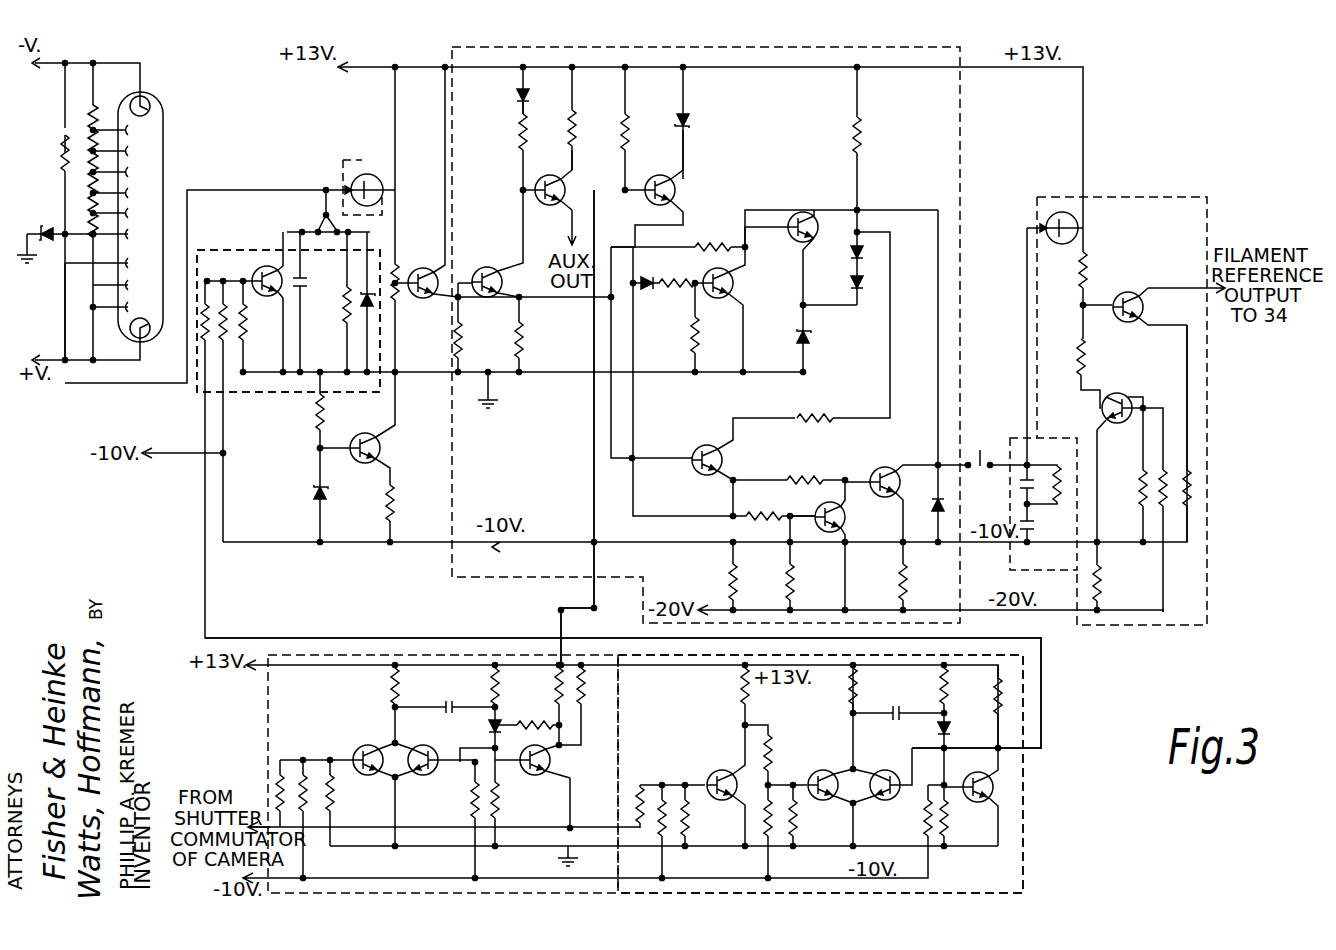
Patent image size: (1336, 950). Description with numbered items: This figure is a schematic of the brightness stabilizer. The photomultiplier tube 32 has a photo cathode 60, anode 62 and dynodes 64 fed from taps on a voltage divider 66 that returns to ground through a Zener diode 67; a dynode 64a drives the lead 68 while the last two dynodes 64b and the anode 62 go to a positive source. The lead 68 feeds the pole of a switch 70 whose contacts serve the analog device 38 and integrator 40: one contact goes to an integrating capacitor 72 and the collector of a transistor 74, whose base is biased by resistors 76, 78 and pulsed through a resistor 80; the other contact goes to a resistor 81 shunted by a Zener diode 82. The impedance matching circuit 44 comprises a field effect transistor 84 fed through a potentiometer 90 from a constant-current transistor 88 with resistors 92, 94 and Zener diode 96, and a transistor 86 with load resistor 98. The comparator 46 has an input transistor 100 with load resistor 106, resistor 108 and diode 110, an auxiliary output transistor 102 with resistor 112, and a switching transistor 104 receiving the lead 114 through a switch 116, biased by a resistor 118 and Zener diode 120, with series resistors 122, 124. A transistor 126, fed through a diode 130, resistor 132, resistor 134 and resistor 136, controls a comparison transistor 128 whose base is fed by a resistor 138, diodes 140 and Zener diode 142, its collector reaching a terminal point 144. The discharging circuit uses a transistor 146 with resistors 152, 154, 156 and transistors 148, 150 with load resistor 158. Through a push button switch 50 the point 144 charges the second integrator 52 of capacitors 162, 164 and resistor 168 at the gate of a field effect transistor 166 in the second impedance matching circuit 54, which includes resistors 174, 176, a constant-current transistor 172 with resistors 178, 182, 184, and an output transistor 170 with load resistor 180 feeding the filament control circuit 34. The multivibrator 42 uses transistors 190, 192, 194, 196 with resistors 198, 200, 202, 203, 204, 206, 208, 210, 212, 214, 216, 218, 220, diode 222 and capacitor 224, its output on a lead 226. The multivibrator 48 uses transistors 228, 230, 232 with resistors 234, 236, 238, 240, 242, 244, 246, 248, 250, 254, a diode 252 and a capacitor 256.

The photomultiplier tube 32 is at (160, 172).
The X-ray source filament energizing and control circuit 34 is at (232, 859).
The analog device 38 is at (218, 250).
The integrator 40 is at (288, 321).
The one-shot multivibrator 42 is at (1025, 826).
The impedance matching circuit 44 is at (383, 160).
The comparator 46 is at (710, 50).
The one-shot multivibrator 48 is at (268, 700).
The push button switch 50 is at (980, 450).
The second integrator 52 is at (1013, 438).
The second impedance matching circuit 54 is at (1210, 226).
The photo cathode 60 is at (153, 108).
The anode 62 is at (152, 341).
The dynodes 64 is at (132, 150).
The dynode 64a is at (111, 303).
The last two dynodes 64b is at (124, 297).
The voltage divider 66 is at (57, 120).
The Zener diode 67 is at (52, 240).
The lead 68 is at (88, 384).
The single-pole, double-throw switch 70 is at (333, 240).
The integrating capacitor 72 is at (322, 306).
The NPN transistor 74 is at (252, 270).
The resistor 76 is at (259, 328).
The resistor 78 is at (226, 380).
The resistor 80 is at (202, 375).
The resistor 81 is at (344, 325).
The Zener diode 82 is at (373, 306).
The field effect transistor 84 is at (353, 180).
The NPN transistor 86 is at (430, 266).
The NPN transistor 88 is at (380, 442).
The potentiometer 90 is at (400, 300).
The resistor 92 is at (397, 500).
The resistor 94 is at (328, 410).
The Zener diode 96 is at (328, 495).
The load resistor 98 is at (463, 340).
The NPN input transistor 100 is at (494, 268).
The PNP auxiliary output transistor 102 is at (556, 205).
The PNP switching transistor 104 is at (672, 182).
The load resistor 106 is at (524, 340).
The resistor 108 is at (516, 125).
The diode 110 is at (515, 93).
The load resistor 112 is at (582, 115).
The lead 114 is at (594, 420).
The manually-operated switch 116 is at (590, 612).
The resistor 118 is at (620, 136).
The Zener diode 120 is at (692, 120).
The resistor 122 is at (775, 522).
The resistor 124 is at (786, 578).
The NPN transistor 126 is at (735, 278).
The PNP transistor 128 is at (792, 240).
The diode 130 is at (645, 276).
The resistor 132 is at (680, 300).
The resistor 134 is at (692, 342).
The resistor 136 is at (735, 242).
The resistor 138 is at (866, 134).
The pair of diodes 140 is at (848, 268).
The Zener diode 142 is at (812, 336).
The terminal point 144 is at (935, 460).
The PNP transistor 146 is at (700, 448).
The NPN transistor 148 is at (822, 506).
The NPN transistor 150 is at (884, 466).
The resistor 152 is at (818, 412).
The load resistor 154 is at (724, 580).
The resistor 156 is at (800, 472).
The load resistor 158 is at (898, 580).
The capacitor 162 is at (1014, 484).
The capacitor 164 is at (1015, 522).
The field effect transistor 166 is at (1046, 220).
The resistor 168 is at (1060, 500).
The NPN output transistor 170 is at (1118, 292).
The NPN constant-current-source transistor 172 is at (1120, 394).
The resistor 174 is at (1090, 262).
The resistor 176 is at (1090, 352).
The resistor 178 is at (1102, 580).
The load resistor 180 is at (1194, 500).
The resistor 182 is at (1137, 478).
The resistor 184 is at (1172, 480).
The NPN transistor 190 is at (718, 770).
The NPN transistor 192 is at (798, 772).
The NPN transistor 194 is at (896, 772).
The NPN transistor 196 is at (996, 790).
The resistor 198 is at (688, 815).
The resistor 200 is at (668, 830).
The input resistor 202 is at (597, 800).
The load resistor 203 is at (740, 690).
The load resistor 204 is at (846, 684).
The resistor 206 is at (778, 744).
The resistor 208 is at (798, 820).
The resistor 210 is at (772, 836).
The resistor 212 is at (872, 800).
The load resistor 214 is at (1004, 706).
The resistor 216 is at (948, 820).
The resistor 218 is at (922, 820).
The resistor 220 is at (950, 668).
The diode 222 is at (936, 730).
The capacitor 224 is at (896, 706).
The lead 226 is at (1041, 700).
The NPN transistor 228 is at (370, 744).
The NPN transistor 230 is at (432, 776).
The NPN transistor 232 is at (525, 774).
The load resistor 234 is at (390, 684).
The resistor 236 is at (335, 790).
The resistor 238 is at (305, 775).
The resistor 240 is at (278, 773).
The resistor 242 is at (540, 720).
The load resistor 244 is at (588, 692).
The resistor 246 is at (553, 692).
The resistor 248 is at (497, 800).
The resistor 250 is at (470, 804).
The diode 252 is at (488, 732).
The resistor 254 is at (490, 684).
The capacitor 256 is at (448, 714).